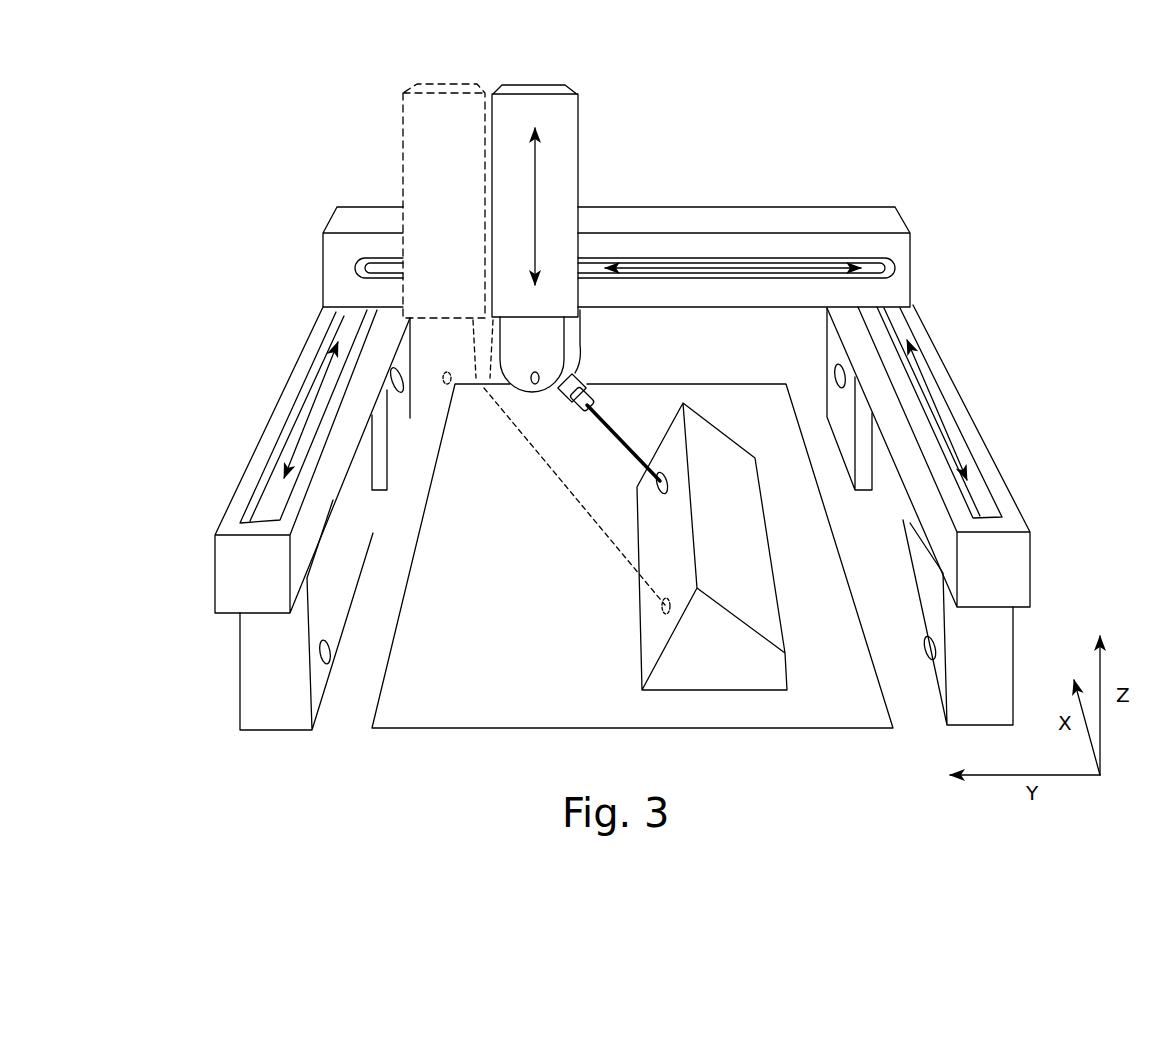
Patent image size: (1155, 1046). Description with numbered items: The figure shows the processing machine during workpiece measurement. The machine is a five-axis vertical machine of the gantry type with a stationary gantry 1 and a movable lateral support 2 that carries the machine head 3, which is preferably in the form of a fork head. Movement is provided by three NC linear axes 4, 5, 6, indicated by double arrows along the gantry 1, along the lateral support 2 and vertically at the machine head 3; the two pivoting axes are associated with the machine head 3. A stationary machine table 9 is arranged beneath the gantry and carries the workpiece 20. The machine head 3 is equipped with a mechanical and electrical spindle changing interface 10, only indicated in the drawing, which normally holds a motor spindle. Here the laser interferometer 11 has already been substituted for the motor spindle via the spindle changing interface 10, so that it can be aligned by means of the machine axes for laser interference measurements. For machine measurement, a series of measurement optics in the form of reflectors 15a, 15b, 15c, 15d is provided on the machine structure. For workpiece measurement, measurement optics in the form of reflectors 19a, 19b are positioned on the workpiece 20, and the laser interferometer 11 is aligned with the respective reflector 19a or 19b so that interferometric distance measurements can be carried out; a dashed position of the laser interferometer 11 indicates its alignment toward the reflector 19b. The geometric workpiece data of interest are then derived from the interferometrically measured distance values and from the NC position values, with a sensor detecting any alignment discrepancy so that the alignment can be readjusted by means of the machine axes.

The stationary gantry 1 is at (944, 337).
The movable lateral support 2 is at (878, 220).
The machine head 3 is at (596, 344).
The NC linear axis 4 is at (288, 453).
The NC linear axis 5 is at (760, 267).
The NC linear axis 6 is at (545, 163).
The machine table 9 is at (470, 693).
The spindle changing interface 10 is at (594, 373).
The laser interferometer 11 is at (570, 410).
The reflector 15a is at (930, 660).
The reflector 15b is at (838, 373).
The reflector 15c is at (405, 400).
The reflector 15d is at (328, 660).
The reflector 19a is at (657, 470).
The reflector 19b is at (655, 613).
The workpiece 20 is at (770, 683).